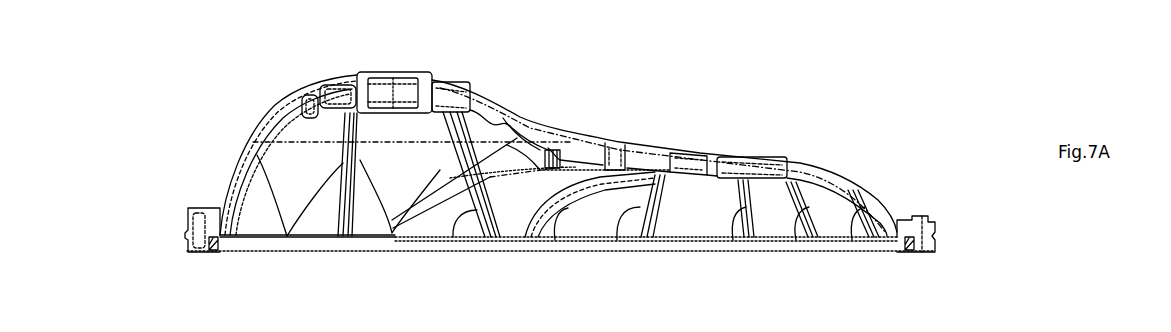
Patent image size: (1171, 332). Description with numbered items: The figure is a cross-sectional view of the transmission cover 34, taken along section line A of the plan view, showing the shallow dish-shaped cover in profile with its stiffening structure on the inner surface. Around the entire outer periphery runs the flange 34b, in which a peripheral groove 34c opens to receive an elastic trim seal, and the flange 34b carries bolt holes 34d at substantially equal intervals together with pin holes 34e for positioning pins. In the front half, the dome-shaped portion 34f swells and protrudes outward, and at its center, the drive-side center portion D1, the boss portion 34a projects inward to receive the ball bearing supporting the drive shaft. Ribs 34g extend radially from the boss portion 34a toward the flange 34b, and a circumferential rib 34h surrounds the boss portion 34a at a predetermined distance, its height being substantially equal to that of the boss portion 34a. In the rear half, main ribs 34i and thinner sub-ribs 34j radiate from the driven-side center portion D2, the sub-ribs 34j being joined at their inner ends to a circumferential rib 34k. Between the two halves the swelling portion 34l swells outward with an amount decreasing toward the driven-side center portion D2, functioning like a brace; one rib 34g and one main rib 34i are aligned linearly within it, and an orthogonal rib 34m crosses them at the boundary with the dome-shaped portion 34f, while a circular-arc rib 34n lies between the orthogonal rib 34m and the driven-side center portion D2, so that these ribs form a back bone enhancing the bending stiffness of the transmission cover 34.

The transmission cover 34 is at (889, 127).
The boss portion 34a is at (342, 100).
The flange 34b is at (378, 253).
The peripheral groove 34c is at (213, 257).
The bolt holes 34d is at (922, 254).
The pin holes 34e is at (198, 258).
The dome-shaped portion 34f is at (250, 121).
The ribs 34g is at (487, 118).
The circumferential rib 34h is at (303, 103).
The main ribs 34i is at (555, 240).
The sub-ribs 34j is at (617, 240).
The circumferential rib 34k is at (785, 158).
The swelling portion 34l is at (689, 148).
The orthogonal rib 34m is at (566, 140).
The circular-arc rib 34n is at (625, 140).
The drive-side center portion D1 is at (393, 110).
The driven-side center portion D2 is at (710, 178).
The region A is at (328, 322).